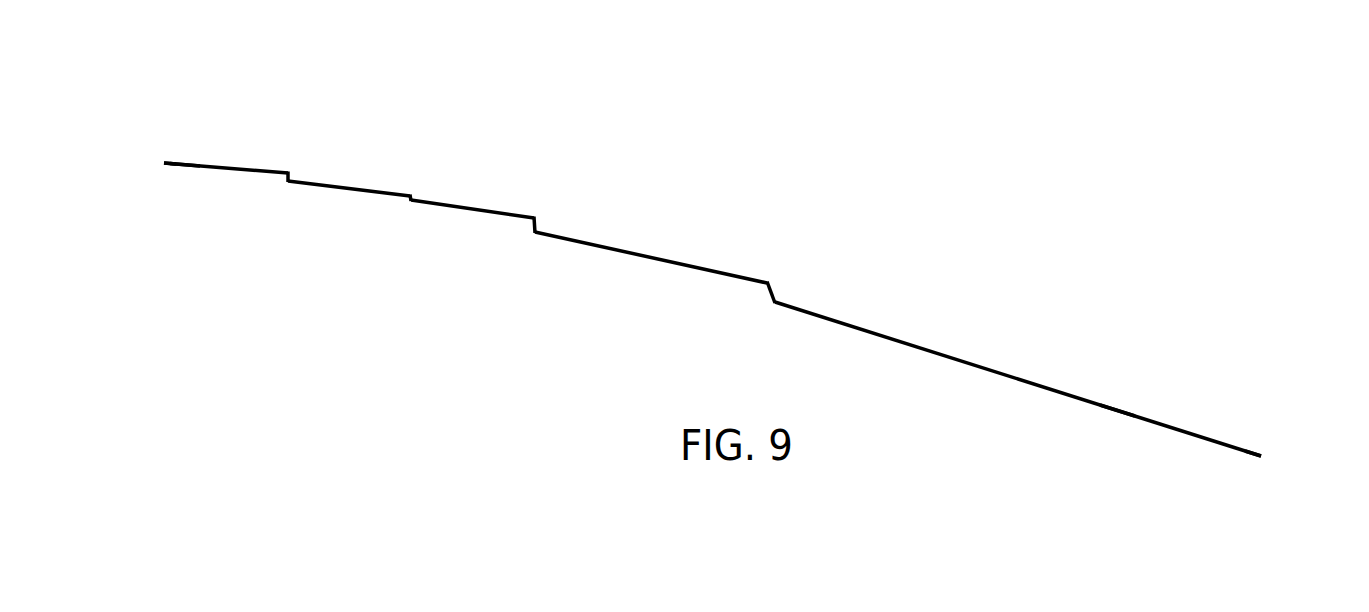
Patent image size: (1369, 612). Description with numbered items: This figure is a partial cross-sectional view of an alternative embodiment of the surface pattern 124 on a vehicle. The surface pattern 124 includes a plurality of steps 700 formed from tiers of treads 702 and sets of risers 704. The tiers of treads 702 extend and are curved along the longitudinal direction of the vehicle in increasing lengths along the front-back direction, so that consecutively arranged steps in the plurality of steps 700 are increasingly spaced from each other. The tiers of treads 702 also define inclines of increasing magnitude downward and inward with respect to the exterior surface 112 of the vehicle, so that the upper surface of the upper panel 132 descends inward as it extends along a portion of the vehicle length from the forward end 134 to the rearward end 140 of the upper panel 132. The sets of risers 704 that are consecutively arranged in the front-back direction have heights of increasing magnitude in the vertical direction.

The exterior surface 112 is at (182, 163).
The surface pattern 124 is at (730, 132).
The upper panel 132 is at (1117, 418).
The forward end 134 is at (163, 163).
The rearward end 140 is at (1262, 456).
The plurality of steps 700 is at (810, 152).
The tiers of treads 702 is at (223, 168).
The sets of risers 704 is at (290, 176).